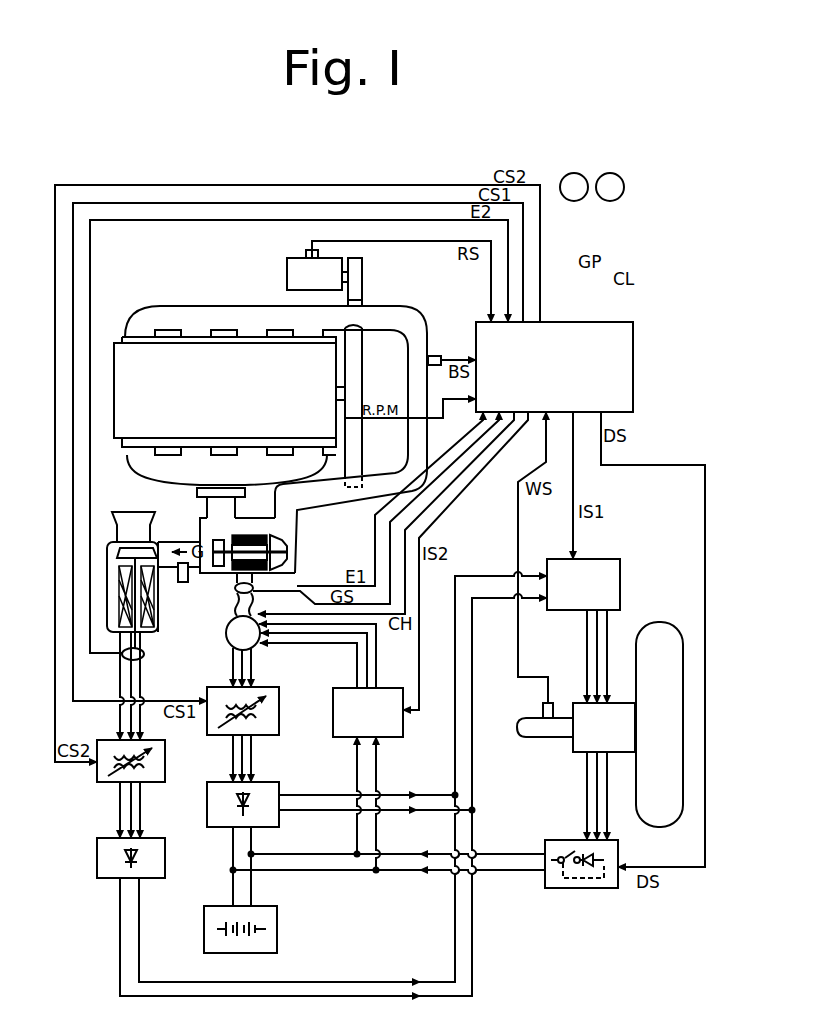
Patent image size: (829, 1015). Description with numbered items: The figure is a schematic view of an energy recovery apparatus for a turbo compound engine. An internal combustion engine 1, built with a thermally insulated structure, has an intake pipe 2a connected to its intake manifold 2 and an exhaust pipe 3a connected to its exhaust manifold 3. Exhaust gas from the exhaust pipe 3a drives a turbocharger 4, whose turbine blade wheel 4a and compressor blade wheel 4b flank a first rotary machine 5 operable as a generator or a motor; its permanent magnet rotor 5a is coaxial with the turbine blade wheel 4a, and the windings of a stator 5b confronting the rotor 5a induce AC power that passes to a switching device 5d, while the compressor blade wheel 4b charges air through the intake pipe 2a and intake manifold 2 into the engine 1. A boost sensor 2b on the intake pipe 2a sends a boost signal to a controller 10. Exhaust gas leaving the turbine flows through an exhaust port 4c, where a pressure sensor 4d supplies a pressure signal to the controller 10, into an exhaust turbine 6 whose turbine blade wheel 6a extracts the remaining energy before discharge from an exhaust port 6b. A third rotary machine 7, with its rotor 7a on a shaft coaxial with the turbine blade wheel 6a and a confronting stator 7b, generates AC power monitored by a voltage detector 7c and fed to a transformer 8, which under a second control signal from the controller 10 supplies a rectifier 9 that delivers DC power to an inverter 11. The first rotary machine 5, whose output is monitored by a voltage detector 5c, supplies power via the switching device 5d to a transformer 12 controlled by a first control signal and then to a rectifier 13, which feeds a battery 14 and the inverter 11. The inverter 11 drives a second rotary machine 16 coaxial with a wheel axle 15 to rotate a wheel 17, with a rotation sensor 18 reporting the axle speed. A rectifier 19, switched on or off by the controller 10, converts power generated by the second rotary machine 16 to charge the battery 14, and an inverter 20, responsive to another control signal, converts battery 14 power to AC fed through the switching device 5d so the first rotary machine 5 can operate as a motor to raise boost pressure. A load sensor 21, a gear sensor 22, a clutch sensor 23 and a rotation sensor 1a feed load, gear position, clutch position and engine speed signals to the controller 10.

The internal combustion engine 1 is at (156, 366).
The rotation sensor 1a is at (349, 398).
The intake manifold 2 is at (228, 320).
The intake pipe 2a is at (426, 316).
The boost sensor 2b is at (444, 353).
The exhaust manifold 3 is at (126, 456).
The exhaust pipe 3a is at (196, 502).
The turbocharger 4 is at (254, 528).
The turbine blade wheel 4a is at (206, 546).
The compressor blade wheel 4b is at (289, 552).
The exhaust port 4c is at (200, 526).
The pressure sensor 4d is at (183, 582).
The first rotary machine 5 is at (270, 535).
The rotor 5a is at (269, 538).
The stator 5b is at (269, 568).
The voltage detector 5c is at (253, 589).
The switching device 5d is at (227, 634).
The exhaust turbine 6 is at (108, 590).
The turbine blade wheel 6a is at (117, 552).
The exhaust port 6b is at (122, 512).
The third rotary machine 7 is at (108, 624).
The rotor 7a is at (146, 656).
The stator 7b is at (162, 627).
The voltage detector 7c is at (121, 655).
The transformer 8 is at (97, 778).
The rectifier 9 is at (97, 860).
The controller 10 is at (633, 362).
The inverter 11 is at (620, 582).
The transformer 12 is at (279, 712).
The rectifier 13 is at (271, 798).
The battery 14 is at (277, 934).
The wheel axle 15 is at (538, 738).
The second rotary machine 16 is at (576, 752).
The wheel 17 is at (658, 624).
The rotation sensor 18 is at (541, 702).
The rectifier 19 is at (558, 888).
The inverter 20 is at (396, 722).
The load sensor 21 is at (287, 274).
The gear sensor 22 is at (577, 173).
The clutch sensor 23 is at (620, 176).